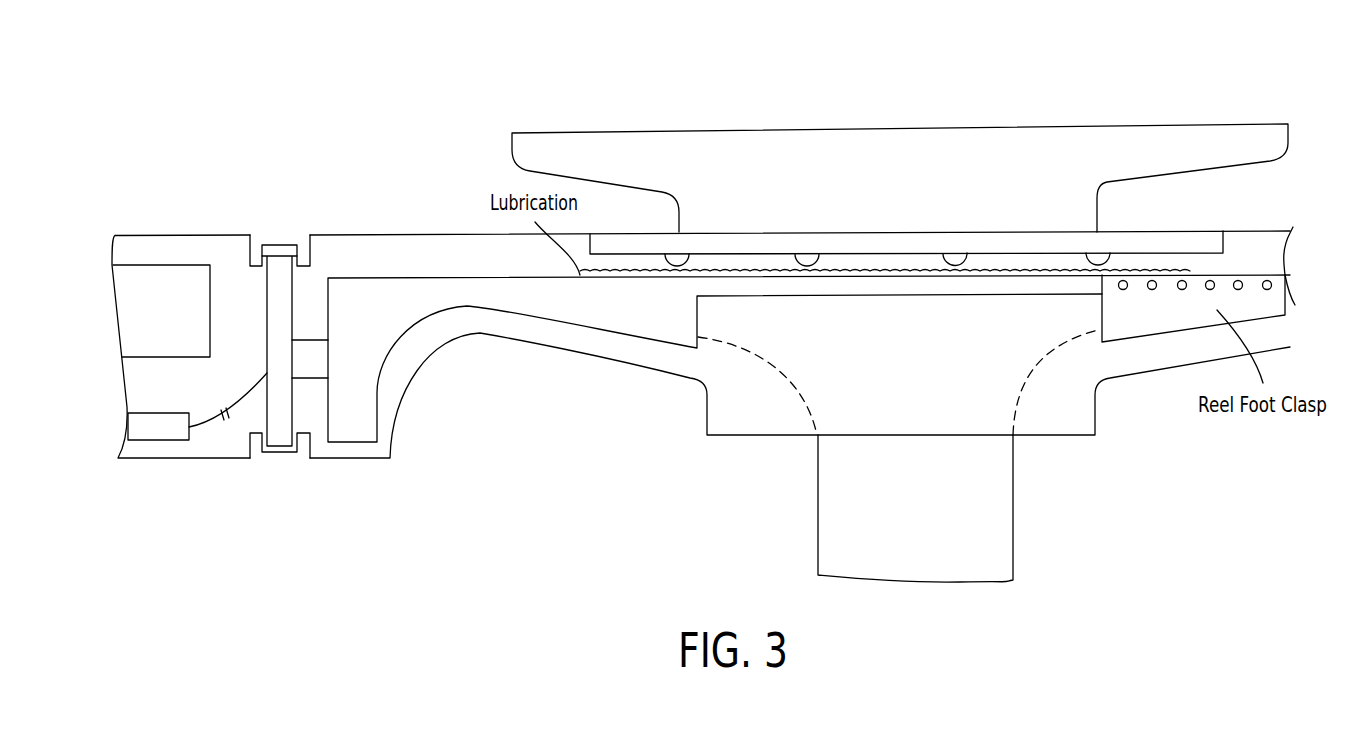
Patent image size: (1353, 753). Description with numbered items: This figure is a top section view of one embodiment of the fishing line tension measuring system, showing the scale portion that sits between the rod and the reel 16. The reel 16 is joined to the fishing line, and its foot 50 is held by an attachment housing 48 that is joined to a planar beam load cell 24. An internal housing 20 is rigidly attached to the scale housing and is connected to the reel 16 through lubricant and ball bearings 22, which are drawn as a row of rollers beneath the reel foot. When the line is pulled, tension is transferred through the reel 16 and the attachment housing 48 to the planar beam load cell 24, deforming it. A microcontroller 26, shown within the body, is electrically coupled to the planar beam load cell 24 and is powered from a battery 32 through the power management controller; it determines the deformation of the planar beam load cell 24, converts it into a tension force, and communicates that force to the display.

The reel 16 is at (838, 507).
The internal housing 20 is at (478, 292).
The ball bearings 22 is at (955, 258).
The planar beam load cell 24 is at (278, 263).
The microcontroller 26 is at (160, 433).
The battery 32 is at (142, 278).
The attachment housing 48 is at (280, 240).
The foot 50 is at (1197, 124).